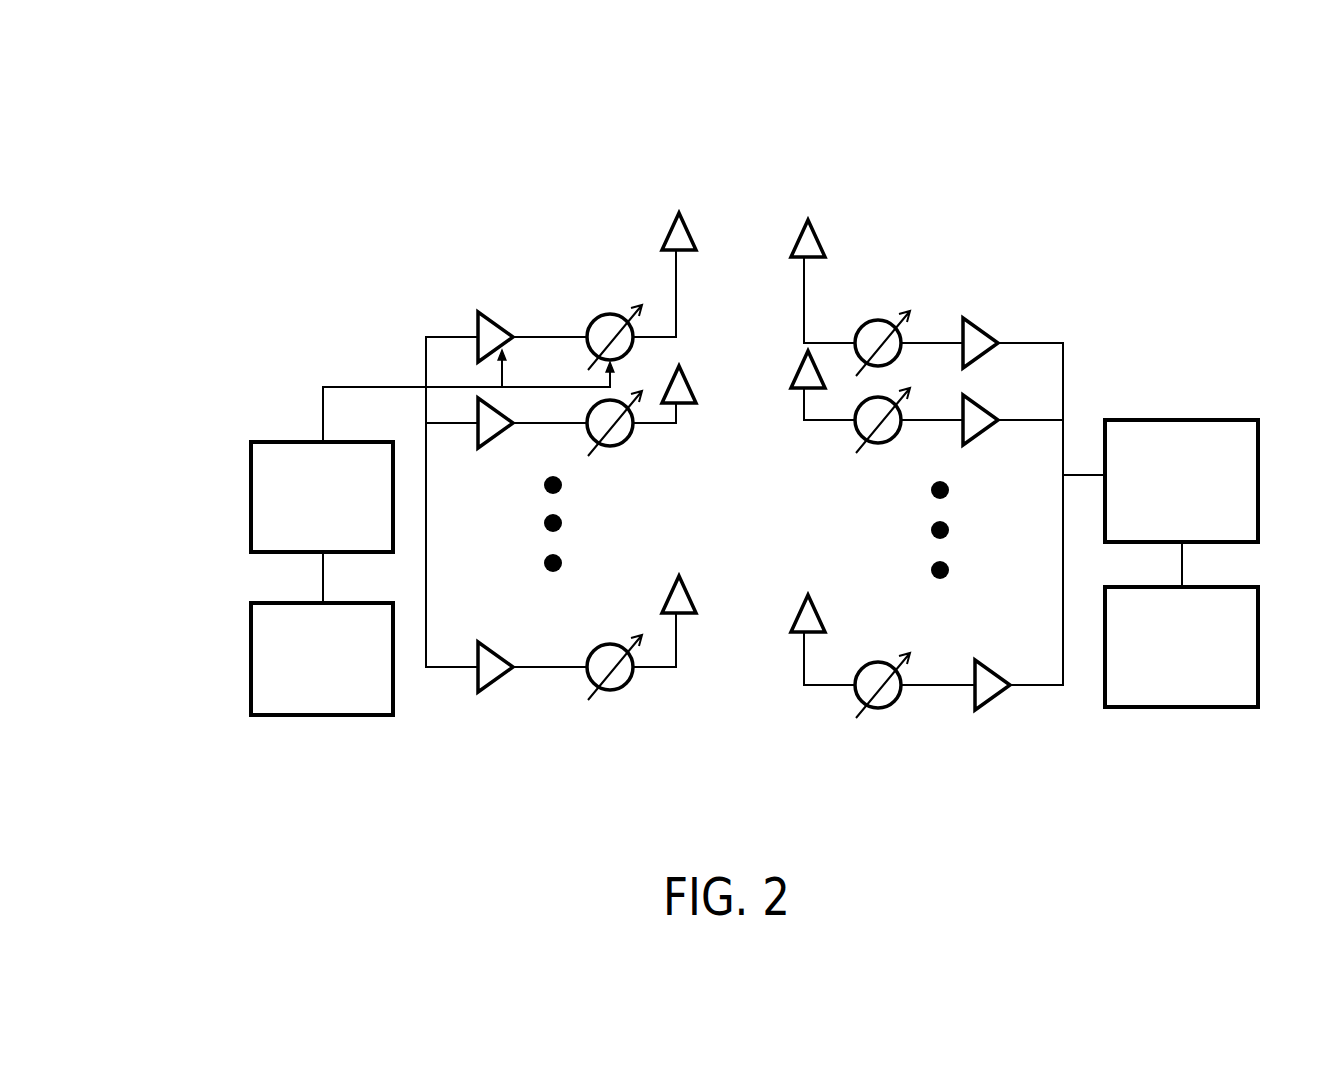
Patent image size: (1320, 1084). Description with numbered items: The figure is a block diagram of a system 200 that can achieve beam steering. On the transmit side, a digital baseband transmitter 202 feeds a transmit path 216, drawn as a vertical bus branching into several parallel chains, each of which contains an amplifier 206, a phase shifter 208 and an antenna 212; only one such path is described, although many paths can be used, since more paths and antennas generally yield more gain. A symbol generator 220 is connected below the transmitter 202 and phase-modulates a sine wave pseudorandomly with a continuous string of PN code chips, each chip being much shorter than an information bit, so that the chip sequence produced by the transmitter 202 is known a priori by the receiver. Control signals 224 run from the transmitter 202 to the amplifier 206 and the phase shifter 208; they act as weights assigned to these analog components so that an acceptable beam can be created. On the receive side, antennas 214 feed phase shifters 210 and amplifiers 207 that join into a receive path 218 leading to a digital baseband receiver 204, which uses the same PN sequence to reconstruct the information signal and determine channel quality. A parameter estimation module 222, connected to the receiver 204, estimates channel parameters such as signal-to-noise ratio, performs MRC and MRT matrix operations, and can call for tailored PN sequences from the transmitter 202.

The system 200 is at (703, 480).
The digital baseband transmitter 202 is at (274, 430).
The digital baseband receiver 204 is at (1203, 406).
The amplifier 206 is at (468, 309).
The amplifier 207 is at (978, 319).
The phase shifter 208 is at (605, 313).
The phase shifter 210 is at (879, 309).
The antenna 212 is at (694, 235).
The antenna 214 is at (813, 210).
The transmit path 216 is at (412, 338).
The receive path 218 is at (1085, 335).
The symbol generator 220 is at (316, 724).
The parameter estimation module 222 is at (1181, 720).
The control signals 224 is at (328, 376).